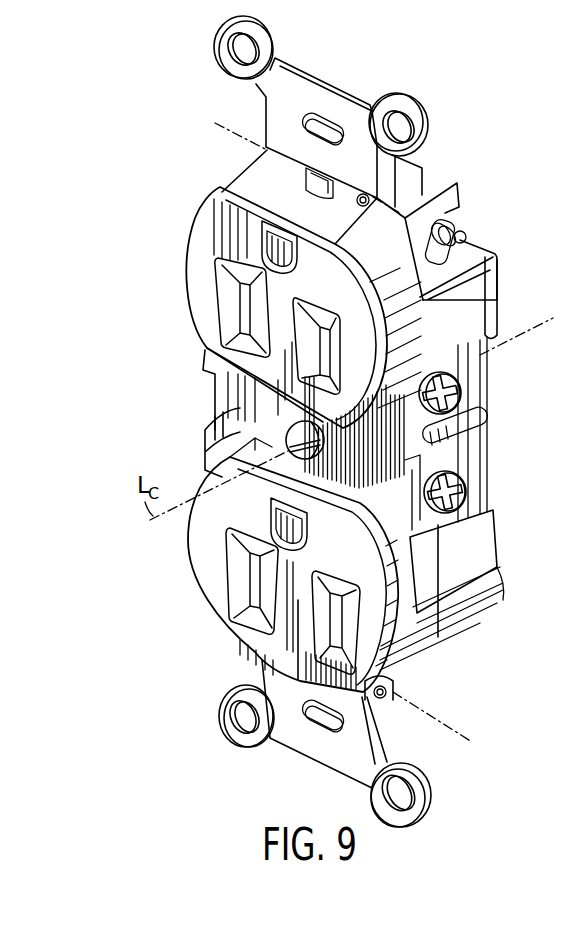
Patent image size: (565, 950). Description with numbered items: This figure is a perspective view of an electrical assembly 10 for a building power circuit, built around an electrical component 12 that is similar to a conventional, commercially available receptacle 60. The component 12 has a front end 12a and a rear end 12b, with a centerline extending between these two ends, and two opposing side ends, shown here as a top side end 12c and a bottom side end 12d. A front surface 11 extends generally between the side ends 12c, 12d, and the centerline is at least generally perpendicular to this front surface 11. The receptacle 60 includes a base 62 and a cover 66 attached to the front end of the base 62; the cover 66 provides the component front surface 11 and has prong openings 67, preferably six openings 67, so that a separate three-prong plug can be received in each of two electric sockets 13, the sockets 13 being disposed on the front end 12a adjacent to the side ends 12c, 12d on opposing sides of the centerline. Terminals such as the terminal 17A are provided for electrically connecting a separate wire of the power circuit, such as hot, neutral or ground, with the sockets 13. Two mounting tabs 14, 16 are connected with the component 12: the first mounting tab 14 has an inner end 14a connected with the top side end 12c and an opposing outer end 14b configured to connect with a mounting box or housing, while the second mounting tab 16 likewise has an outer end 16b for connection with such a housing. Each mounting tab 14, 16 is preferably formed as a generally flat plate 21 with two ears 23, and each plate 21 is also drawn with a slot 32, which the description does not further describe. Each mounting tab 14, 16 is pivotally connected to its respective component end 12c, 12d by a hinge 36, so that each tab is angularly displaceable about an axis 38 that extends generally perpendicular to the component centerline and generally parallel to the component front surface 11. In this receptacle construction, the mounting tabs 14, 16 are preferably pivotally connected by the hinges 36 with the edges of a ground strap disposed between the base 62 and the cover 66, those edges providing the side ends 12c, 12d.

The electrical assembly 10 is at (108, 183).
The front surface 11 is at (245, 436).
The electrical component 12 is at (147, 394).
The front end 12a is at (242, 411).
The rear end 12b is at (488, 450).
The side end 12c is at (403, 163).
The side end 12d is at (392, 681).
The electrical socket 13 is at (203, 305).
The mounting tab 14 is at (200, 105).
The inner end 14a is at (283, 130).
The outer end 14b is at (300, 79).
The mounting tab 16 is at (257, 770).
The outer end 16b is at (347, 774).
The terminal 17A is at (463, 389).
The flat plate 21 is at (351, 180).
The ear 23 is at (216, 32).
The strap slot 32 is at (327, 127).
The hinge 36 is at (297, 188).
The axis 38 is at (455, 197).
The receptacle 60 is at (175, 243).
The base 62 is at (507, 304).
The cover 66 is at (180, 274).
The prong opening 67 is at (248, 332).